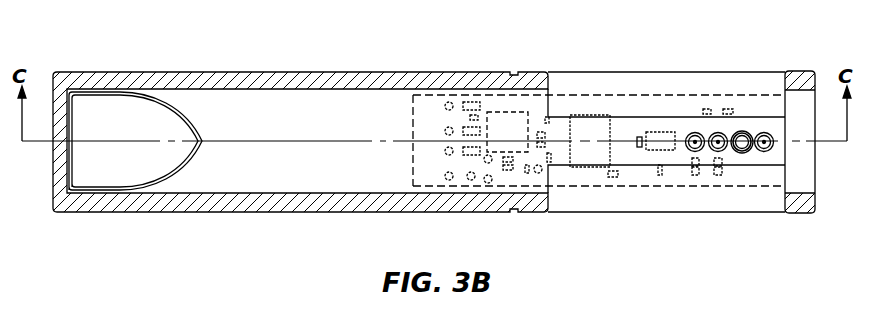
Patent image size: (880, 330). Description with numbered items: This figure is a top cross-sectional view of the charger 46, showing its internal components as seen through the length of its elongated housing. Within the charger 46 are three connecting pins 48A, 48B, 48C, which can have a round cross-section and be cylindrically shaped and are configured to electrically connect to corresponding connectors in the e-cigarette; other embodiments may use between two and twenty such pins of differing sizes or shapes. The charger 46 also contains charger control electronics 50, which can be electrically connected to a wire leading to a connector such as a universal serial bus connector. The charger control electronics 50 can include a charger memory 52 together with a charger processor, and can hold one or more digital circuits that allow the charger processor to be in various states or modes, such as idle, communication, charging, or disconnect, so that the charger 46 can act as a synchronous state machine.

The charger 46 is at (222, 52).
The charger control electronics 50 is at (428, 112).
The charger memory 52 is at (498, 118).
The connecting pin 48A is at (764, 131).
The connecting pin 48B is at (718, 132).
The connecting pin 48C is at (690, 133).